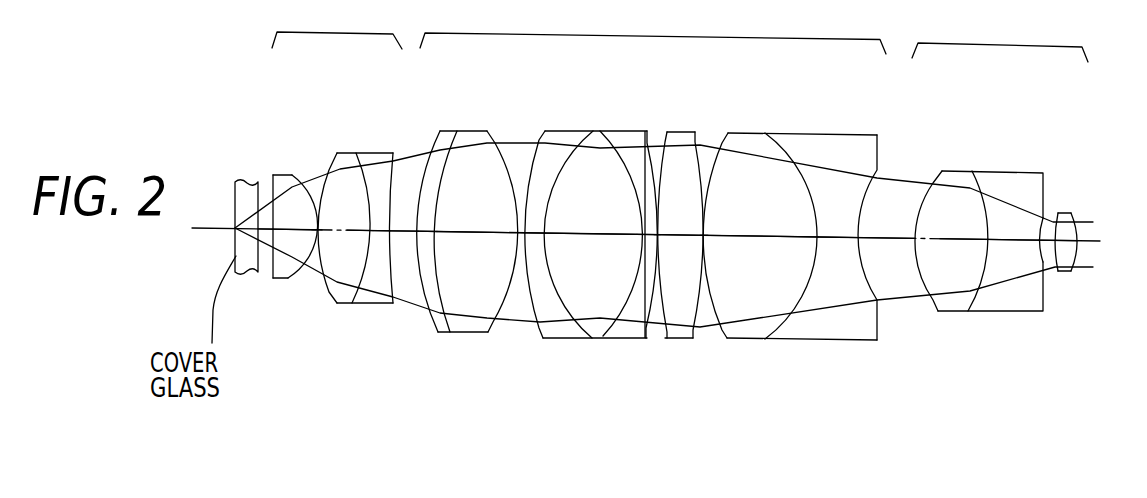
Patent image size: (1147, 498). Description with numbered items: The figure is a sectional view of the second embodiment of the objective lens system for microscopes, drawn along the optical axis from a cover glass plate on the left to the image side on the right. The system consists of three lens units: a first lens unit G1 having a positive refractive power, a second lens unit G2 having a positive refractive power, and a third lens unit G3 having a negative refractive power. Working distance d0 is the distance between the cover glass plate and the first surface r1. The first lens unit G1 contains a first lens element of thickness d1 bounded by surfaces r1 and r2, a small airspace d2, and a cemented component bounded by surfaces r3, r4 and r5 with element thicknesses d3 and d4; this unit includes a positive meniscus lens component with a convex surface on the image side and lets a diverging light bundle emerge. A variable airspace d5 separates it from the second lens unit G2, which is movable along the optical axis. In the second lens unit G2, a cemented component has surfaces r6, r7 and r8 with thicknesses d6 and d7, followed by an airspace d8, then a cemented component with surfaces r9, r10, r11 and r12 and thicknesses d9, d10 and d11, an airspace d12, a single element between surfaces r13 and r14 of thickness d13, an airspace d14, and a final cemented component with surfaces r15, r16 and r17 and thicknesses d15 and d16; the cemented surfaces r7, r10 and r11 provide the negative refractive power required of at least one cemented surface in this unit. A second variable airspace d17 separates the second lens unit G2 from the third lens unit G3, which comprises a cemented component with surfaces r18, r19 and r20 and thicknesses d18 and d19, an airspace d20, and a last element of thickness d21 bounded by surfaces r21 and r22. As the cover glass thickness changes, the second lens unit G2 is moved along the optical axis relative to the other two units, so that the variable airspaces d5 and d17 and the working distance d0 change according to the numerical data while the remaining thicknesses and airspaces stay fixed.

The first lens unit G1 is at (337, 28).
The second lens unit G2 is at (653, 35).
The third lens unit G3 is at (1000, 40).
The radius of curvature of first lens surface r1 is at (270, 176).
The radius of curvature of second lens surface r2 is at (293, 176).
The radius of curvature of third lens surface r3 is at (324, 165).
The radius of curvature of fourth lens surface r4 is at (357, 158).
The radius of curvature of fifth lens surface r5 is at (393, 153).
The radius of curvature of sixth lens surface r6 is at (427, 163).
The radius of curvature of seventh lens surface r7 is at (457, 131).
The radius of curvature of eighth lens surface r8 is at (493, 142).
The radius of curvature of ninth lens surface r9 is at (542, 148).
The radius of curvature of tenth lens surface r10 is at (566, 152).
The radius of curvature of eleventh lens surface r11 is at (618, 155).
The radius of curvature of twelfth lens surface r12 is at (647, 135).
The radius of curvature of thirteenth lens surface r13 is at (666, 134).
The radius of curvature of fourteenth lens surface r14 is at (697, 132).
The radius of curvature of fifteenth lens surface r15 is at (724, 140).
The radius of curvature of sixteenth lens surface r16 is at (777, 147).
The radius of curvature of seventeenth lens surface r17 is at (861, 188).
The radius of curvature of eighteenth lens surface r18 is at (936, 180).
The radius of curvature of nineteenth lens surface r19 is at (979, 172).
The radius of curvature of twentieth lens surface r20 is at (1038, 229).
The radius of curvature of twenty-first lens surface r21 is at (1059, 213).
The radius of curvature of twenty-second lens surface r22 is at (1077, 232).
The working distance d0 is at (265, 229).
The thickness of first lens element d1 is at (280, 229).
The airspace between first and second lens elements d2 is at (317, 230).
The thickness of second lens element d3 is at (345, 230).
The thickness of third lens element d4 is at (381, 231).
The variable airspace between first and second lens units d5 is at (405, 231).
The thickness of fourth lens element d6 is at (429, 231).
The thickness of fifth lens element d7 is at (478, 232).
The airspace between cemented components of second lens unit d8 is at (522, 233).
The thickness of sixth lens element d9 is at (536, 233).
The thickness of seventh lens element d10 is at (587, 234).
The thickness of eighth lens element d11 is at (636, 234).
The airspace following eighth lens element d12 is at (657, 235).
The thickness of ninth lens element d13 is at (679, 235).
The airspace following ninth lens element d14 is at (705, 235).
The thickness of tenth lens element d15 is at (767, 236).
The thickness of eleventh lens element d16 is at (837, 237).
The variable airspace between second and third lens units d17 is at (892, 238).
The thickness of twelfth lens element d18 is at (950, 239).
The thickness of thirteenth lens element d19 is at (1005, 240).
The airspace following thirteenth lens element d20 is at (1041, 241).
The thickness of fourteenth lens element d21 is at (1080, 241).